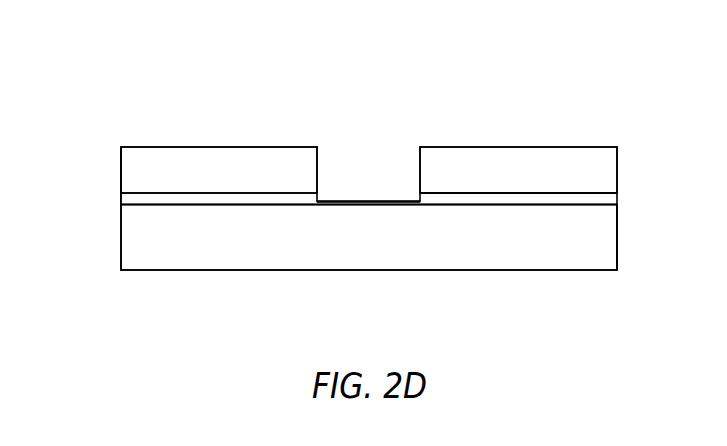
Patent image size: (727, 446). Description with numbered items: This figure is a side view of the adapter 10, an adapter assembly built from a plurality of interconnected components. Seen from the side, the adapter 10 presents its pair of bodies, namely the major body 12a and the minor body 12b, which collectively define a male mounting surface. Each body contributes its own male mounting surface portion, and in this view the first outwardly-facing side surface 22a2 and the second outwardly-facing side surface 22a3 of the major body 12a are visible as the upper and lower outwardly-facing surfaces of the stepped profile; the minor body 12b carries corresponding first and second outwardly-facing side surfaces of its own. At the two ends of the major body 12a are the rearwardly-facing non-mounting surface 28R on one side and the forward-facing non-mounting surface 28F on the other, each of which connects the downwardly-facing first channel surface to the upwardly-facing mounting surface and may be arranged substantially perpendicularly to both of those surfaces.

The adapter 10 is at (68, 71).
The major body 12a is at (233, 126).
The minor body 12b is at (518, 170).
The first outwardly-facing side surface 22a2 is at (490, 160).
The second outwardly-facing side surface 22a3 is at (490, 255).
The rearwardly-facing non-mounting surface 28R is at (121, 185).
The forward-facing non-mounting surface 28F is at (618, 217).